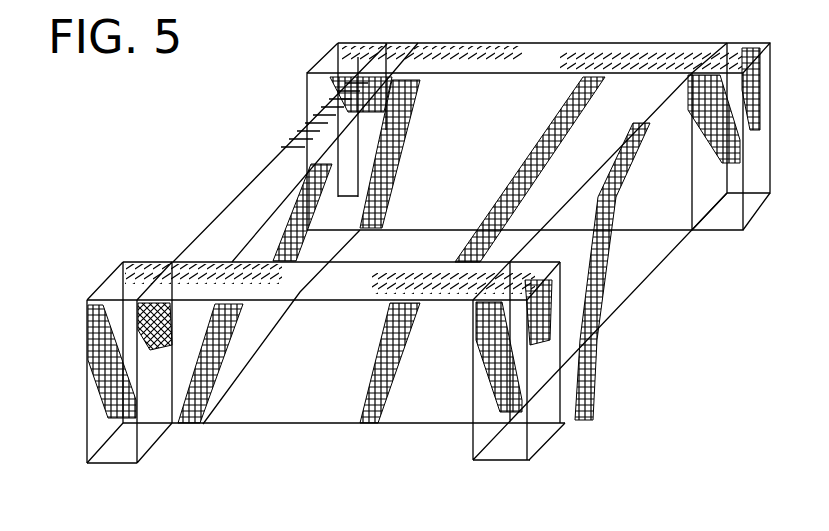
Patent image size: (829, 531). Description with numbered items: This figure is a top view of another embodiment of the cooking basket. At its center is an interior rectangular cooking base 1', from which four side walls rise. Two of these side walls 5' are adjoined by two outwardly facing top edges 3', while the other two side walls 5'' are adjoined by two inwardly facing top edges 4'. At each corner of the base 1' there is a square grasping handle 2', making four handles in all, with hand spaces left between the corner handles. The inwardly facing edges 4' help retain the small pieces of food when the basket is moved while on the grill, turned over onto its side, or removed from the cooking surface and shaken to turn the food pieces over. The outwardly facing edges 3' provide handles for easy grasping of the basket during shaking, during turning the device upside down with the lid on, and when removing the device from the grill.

The interior rectangular cooking base 1' is at (428, 253).
The square grasping handle 2' is at (99, 362).
The outwardly facing top edge 3' is at (433, 149).
The inwardly facing top edge 4' is at (428, 169).
The side wall 5' is at (469, 280).
The side wall 5'' is at (463, 271).